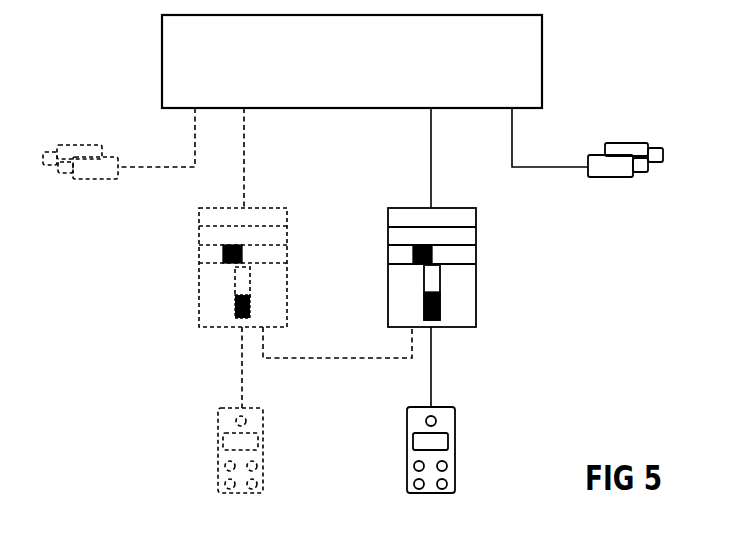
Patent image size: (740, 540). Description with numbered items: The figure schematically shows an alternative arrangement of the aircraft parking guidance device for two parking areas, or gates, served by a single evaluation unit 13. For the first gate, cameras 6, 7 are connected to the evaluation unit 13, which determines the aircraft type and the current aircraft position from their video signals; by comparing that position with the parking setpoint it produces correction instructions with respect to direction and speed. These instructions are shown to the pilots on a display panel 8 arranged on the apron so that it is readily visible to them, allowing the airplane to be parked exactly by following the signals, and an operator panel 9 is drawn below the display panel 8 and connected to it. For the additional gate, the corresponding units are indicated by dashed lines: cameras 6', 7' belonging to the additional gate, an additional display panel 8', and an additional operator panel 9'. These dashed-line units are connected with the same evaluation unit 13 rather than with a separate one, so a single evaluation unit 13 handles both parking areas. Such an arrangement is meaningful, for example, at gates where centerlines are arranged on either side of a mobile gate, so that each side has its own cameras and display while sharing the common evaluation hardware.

The evaluation unit 13 is at (542, 62).
The camera 6 is at (618, 191).
The camera 7 is at (634, 127).
The display panel 8 is at (451, 267).
The operator panel 9 is at (449, 450).
The camera 6' is at (88, 194).
The camera 7' is at (72, 131).
The additional display panel 8' is at (220, 267).
The additional operator panel 9' is at (217, 450).